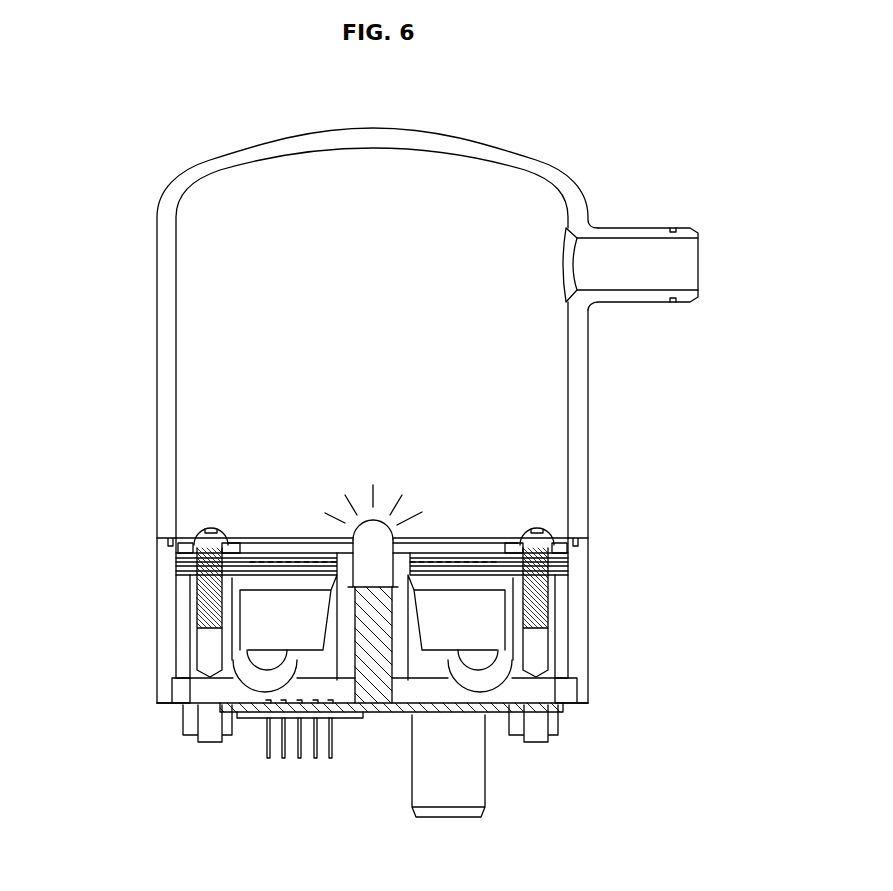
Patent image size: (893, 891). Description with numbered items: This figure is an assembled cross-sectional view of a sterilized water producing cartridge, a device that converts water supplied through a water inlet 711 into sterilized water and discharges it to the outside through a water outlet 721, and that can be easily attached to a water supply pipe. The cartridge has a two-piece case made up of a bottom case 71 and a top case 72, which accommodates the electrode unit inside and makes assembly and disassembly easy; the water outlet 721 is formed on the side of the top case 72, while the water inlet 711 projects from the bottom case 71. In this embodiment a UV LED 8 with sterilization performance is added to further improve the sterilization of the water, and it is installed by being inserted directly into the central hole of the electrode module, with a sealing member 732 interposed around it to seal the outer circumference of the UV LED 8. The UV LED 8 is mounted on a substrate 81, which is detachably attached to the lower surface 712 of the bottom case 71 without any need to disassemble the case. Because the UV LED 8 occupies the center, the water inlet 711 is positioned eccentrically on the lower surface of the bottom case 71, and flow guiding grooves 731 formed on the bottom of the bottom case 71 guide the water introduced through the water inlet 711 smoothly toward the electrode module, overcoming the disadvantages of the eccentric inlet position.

The top case 72 is at (157, 273).
The water outlet 721 is at (635, 228).
The bottom case 71 is at (157, 617).
The lower surface 712 is at (507, 702).
The UV LED 8 is at (397, 523).
The sealing member 732 is at (395, 553).
The flow guiding grooves 731 is at (249, 703).
The substrate 81 is at (500, 714).
The water inlet 711 is at (485, 783).